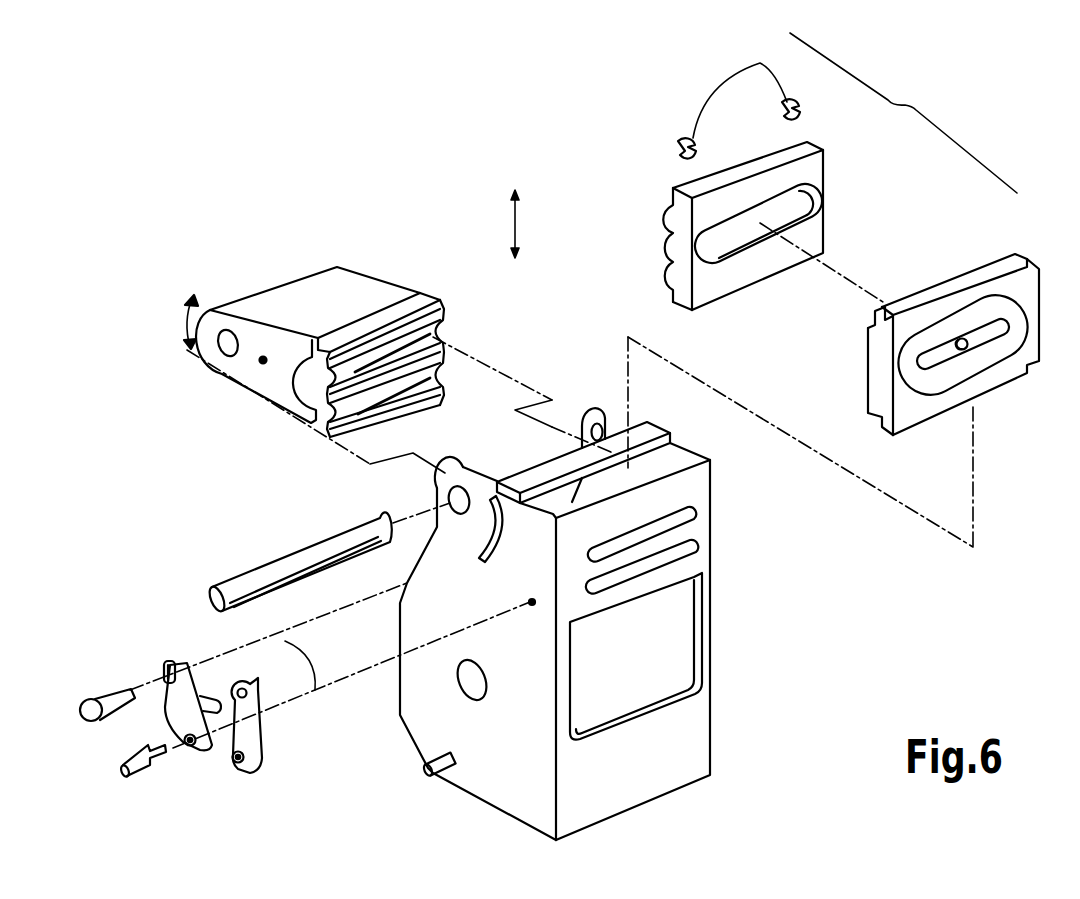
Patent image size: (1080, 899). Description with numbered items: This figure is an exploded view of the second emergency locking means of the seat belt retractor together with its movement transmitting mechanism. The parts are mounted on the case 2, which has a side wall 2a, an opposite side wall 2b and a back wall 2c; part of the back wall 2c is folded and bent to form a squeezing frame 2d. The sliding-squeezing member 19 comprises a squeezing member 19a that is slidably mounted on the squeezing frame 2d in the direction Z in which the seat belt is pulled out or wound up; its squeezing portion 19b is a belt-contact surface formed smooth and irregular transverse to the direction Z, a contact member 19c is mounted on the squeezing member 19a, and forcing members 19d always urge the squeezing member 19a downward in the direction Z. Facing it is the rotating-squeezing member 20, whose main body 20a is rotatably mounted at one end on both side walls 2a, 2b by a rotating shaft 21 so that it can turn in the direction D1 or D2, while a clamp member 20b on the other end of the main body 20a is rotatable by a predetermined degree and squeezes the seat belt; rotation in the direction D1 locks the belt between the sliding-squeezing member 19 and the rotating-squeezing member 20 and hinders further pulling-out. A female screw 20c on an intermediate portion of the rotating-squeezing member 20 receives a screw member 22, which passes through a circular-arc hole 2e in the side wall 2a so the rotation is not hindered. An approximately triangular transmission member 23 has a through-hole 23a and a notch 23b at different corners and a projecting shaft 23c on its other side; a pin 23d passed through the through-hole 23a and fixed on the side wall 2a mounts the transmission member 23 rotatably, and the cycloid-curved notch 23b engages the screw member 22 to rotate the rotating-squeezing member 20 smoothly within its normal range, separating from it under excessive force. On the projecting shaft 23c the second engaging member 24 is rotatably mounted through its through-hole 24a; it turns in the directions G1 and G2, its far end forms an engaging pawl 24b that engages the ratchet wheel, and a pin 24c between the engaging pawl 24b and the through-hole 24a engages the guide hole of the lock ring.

The case 2 is at (578, 626).
The side wall 2a is at (478, 790).
The side wall 2b is at (712, 597).
The back wall 2c is at (635, 790).
The squeezing frame 2d is at (690, 462).
The hole 2e is at (500, 537).
The sliding-squeezing member 19 is at (822, 234).
The squeezing member 19a is at (998, 258).
The squeezing portion 19b is at (667, 243).
The contact member 19c is at (826, 160).
The forcing members 19d is at (743, 103).
The rotating-squeezing member 20 is at (331, 328).
The main body 20a is at (273, 297).
The clamp member 20b is at (428, 388).
The female screw 20c is at (260, 367).
The rotating shaft 21 is at (260, 567).
The screw member 22 is at (82, 701).
The transmission member 23 is at (170, 711).
The through-hole 23a is at (188, 748).
The notch 23b is at (165, 667).
The projecting shaft 23c is at (210, 693).
The pin 23d is at (126, 770).
The second engaging member 24 is at (266, 740).
The through-hole 24a is at (250, 684).
The engaging pawl 24b is at (247, 770).
The pin 24c is at (232, 767).
The direction D1 is at (175, 342).
The direction D2 is at (191, 310).
The direction G1 is at (332, 667).
The direction G2 is at (306, 660).
The direction Z is at (525, 224).